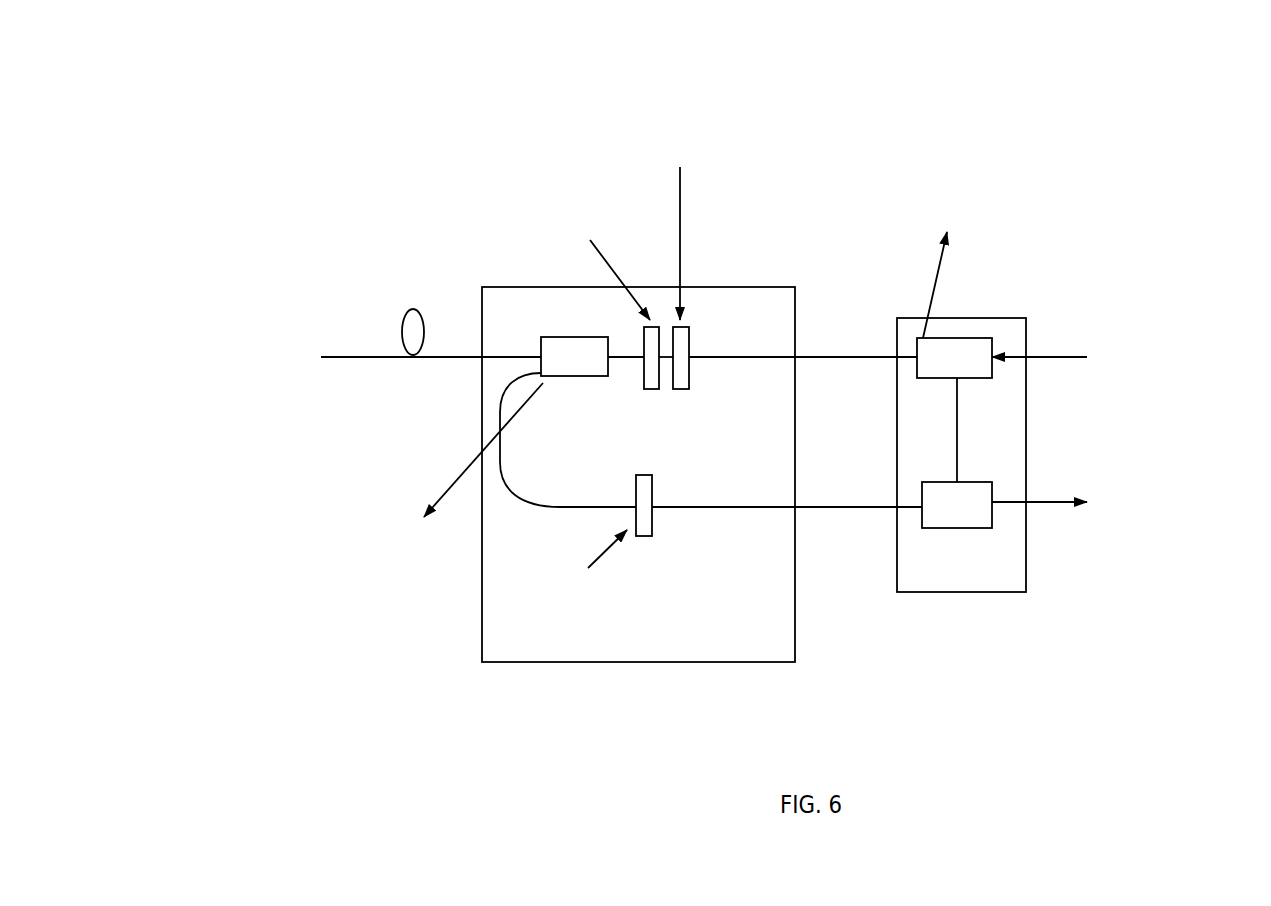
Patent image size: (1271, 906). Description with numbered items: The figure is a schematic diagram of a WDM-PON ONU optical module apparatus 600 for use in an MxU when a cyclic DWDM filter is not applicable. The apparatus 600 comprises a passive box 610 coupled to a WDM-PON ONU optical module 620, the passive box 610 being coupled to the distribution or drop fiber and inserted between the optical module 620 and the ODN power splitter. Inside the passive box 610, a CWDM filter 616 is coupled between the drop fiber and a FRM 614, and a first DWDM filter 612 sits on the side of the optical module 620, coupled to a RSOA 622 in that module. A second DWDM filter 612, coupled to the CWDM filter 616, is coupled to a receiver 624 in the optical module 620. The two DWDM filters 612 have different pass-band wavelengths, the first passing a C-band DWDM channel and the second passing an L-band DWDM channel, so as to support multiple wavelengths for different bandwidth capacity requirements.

The WDM-PON ONU optical module apparatus 600 is at (308, 70).
The passive box 610 is at (695, 287).
The DWDM filter 612 is at (688, 389).
The FRM 614 is at (651, 389).
The CWDM filter 616 is at (575, 376).
The WDM-PON ONU optical module 620 is at (961, 432).
The RSOA 622 is at (978, 378).
The receiver 624 is at (977, 528).